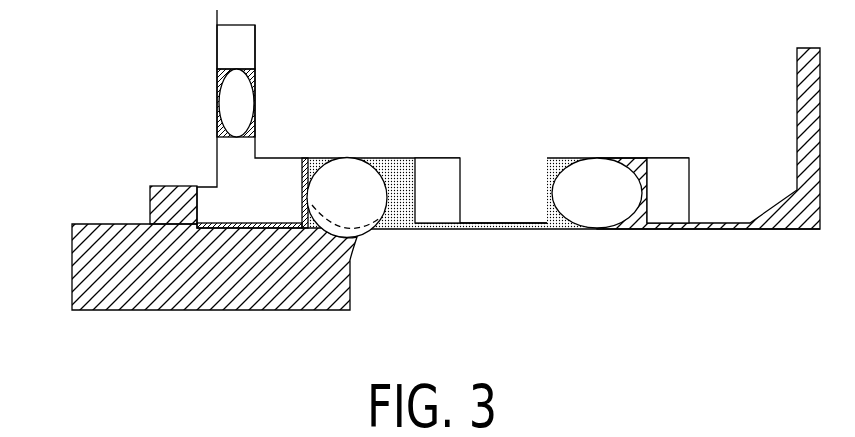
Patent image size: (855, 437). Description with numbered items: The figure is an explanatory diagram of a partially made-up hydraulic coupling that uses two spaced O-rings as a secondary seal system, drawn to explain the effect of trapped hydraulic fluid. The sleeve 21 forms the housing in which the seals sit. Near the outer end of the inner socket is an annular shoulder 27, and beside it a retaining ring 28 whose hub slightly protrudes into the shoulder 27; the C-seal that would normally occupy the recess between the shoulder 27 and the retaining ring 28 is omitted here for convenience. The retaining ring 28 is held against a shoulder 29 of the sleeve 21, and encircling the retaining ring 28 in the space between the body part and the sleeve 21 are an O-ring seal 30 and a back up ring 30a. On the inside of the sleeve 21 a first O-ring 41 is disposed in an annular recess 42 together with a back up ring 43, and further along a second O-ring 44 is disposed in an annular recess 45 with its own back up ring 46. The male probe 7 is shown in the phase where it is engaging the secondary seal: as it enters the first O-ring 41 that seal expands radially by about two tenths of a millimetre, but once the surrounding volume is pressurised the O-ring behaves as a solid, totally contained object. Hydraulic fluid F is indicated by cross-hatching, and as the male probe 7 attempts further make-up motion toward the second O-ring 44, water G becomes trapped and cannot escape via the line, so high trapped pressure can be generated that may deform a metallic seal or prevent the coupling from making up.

The hydraulic fluid F is at (72, 263).
The annular shoulder 27 is at (150, 207).
The sleeve 21 is at (440, 57).
The back up ring 30a is at (248, 50).
The O-ring seal 30 is at (224, 110).
The retaining ring 28 is at (278, 163).
The shoulder of the sleeve 29 is at (306, 158).
The water G is at (403, 160).
The second O-ring 44 is at (353, 170).
The annular recess 45 is at (427, 158).
The back up ring 46 is at (450, 197).
The male probe 7 is at (768, 251).
The first O-ring 41 is at (600, 170).
The annular recess 42 is at (657, 158).
The back up ring 43 is at (678, 197).